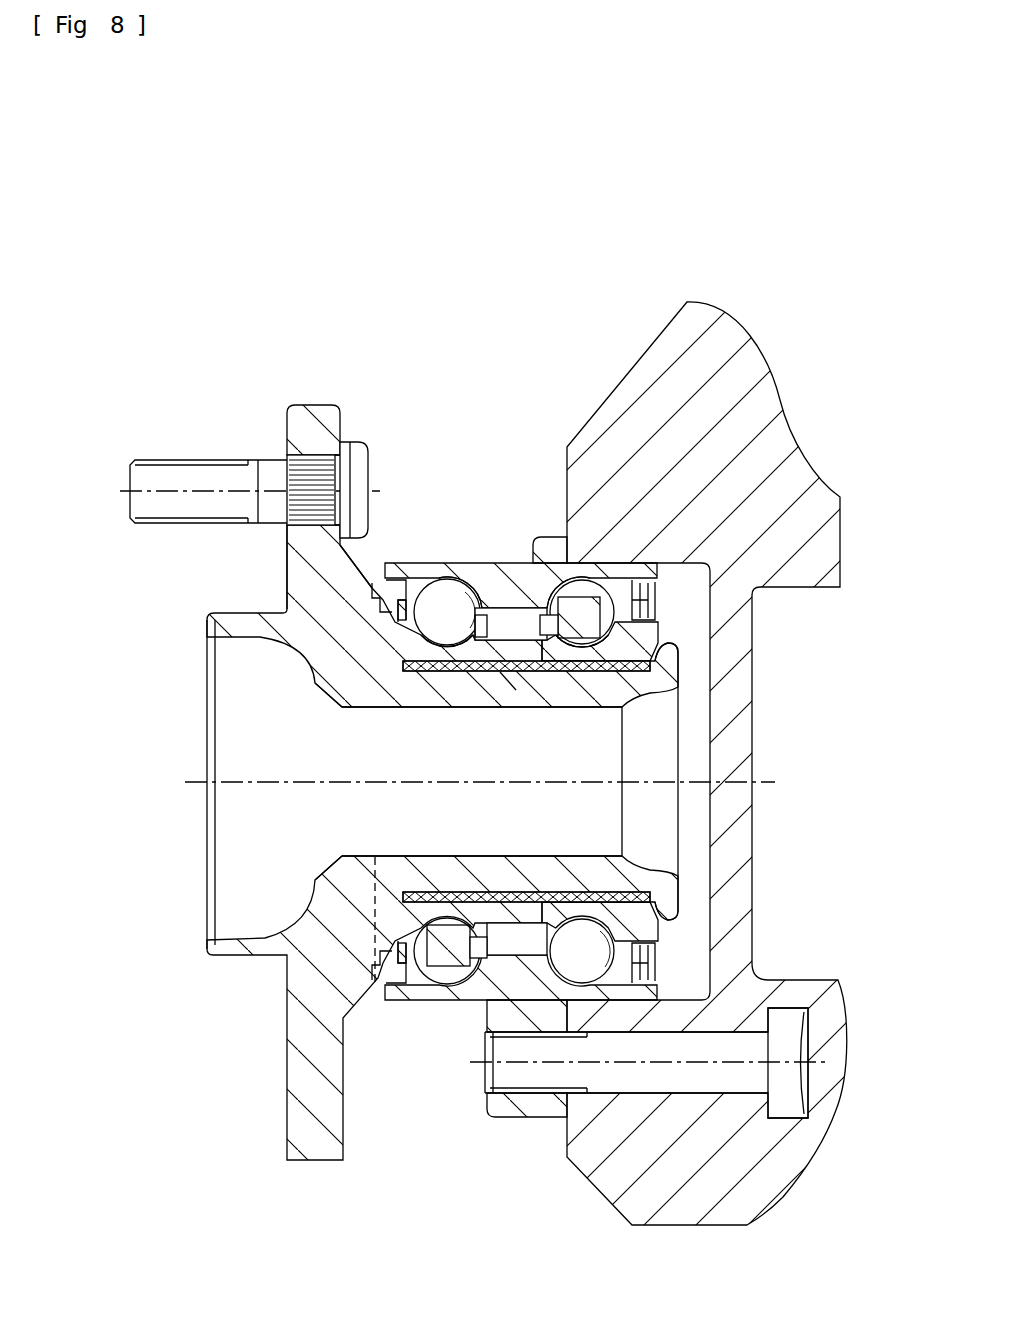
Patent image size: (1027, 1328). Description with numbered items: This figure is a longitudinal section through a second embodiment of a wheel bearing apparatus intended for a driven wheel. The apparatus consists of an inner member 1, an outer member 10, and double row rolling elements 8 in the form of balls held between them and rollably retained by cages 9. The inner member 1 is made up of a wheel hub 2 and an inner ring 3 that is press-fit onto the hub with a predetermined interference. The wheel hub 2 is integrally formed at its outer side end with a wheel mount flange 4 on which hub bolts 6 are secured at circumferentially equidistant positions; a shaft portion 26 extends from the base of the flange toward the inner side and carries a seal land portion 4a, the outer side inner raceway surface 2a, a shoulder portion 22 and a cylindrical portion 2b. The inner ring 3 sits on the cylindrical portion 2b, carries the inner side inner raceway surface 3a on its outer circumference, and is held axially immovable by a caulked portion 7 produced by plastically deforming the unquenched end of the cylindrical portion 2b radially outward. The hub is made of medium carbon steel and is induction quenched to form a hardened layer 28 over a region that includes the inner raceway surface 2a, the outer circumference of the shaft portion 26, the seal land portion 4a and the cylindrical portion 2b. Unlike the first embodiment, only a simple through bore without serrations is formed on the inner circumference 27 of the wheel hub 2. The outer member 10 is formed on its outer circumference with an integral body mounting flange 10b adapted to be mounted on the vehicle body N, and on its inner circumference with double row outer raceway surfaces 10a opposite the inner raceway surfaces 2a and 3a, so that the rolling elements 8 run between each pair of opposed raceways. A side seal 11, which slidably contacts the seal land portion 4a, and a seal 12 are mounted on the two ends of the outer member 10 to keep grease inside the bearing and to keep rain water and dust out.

The inner member 1 is at (280, 911).
The wheel hub 2 is at (320, 643).
The inner raceway surface 2a is at (430, 628).
The cylindrical portion 2b is at (652, 672).
The inner ring 3 is at (637, 632).
The inner raceway surface 3a is at (590, 637).
The wheel mount flange 4 is at (300, 410).
The seal land portion 4a is at (376, 590).
The hub bolt 6 is at (200, 478).
The caulked portion 7 is at (672, 656).
The rolling elements 8 is at (445, 972).
The cage 9 is at (538, 922).
The outer member 10 is at (470, 562).
The outer raceway surface 10a is at (437, 597).
The body mounting flange 10b is at (515, 1113).
The seal 11 is at (393, 983).
The seal 12 is at (660, 962).
The shoulder portion 22 is at (545, 666).
The shaft portion 26 is at (523, 855).
The inner circumference 27 is at (425, 708).
The hardened layer 28 is at (507, 672).
The body N is at (620, 398).